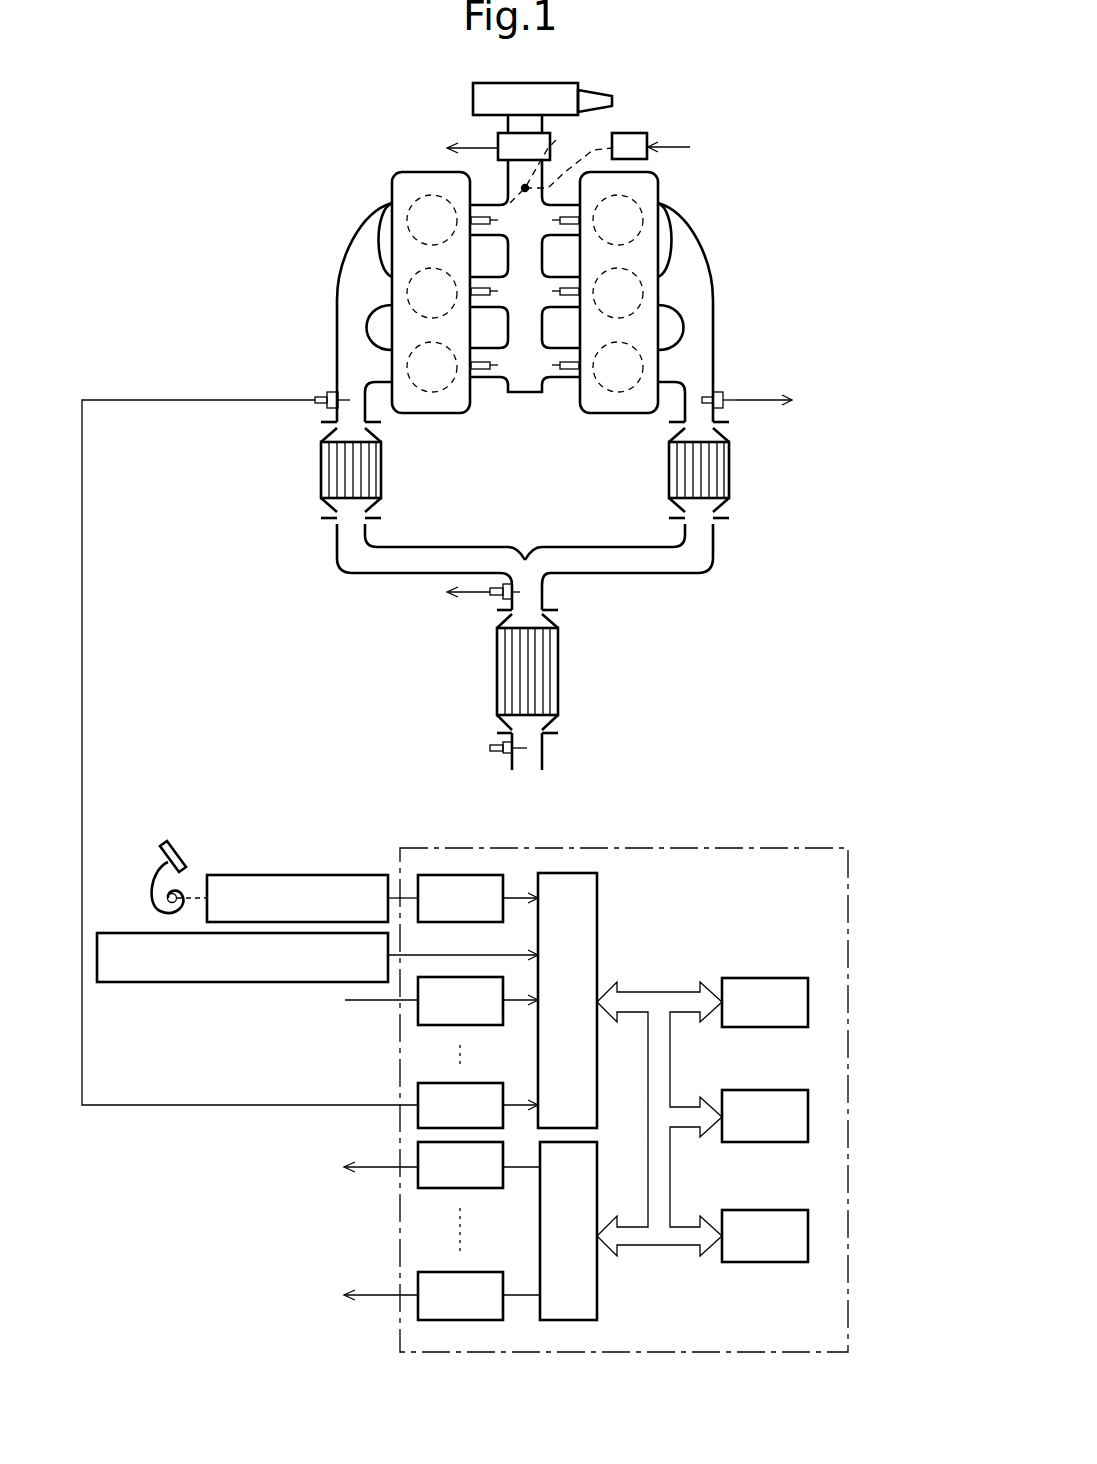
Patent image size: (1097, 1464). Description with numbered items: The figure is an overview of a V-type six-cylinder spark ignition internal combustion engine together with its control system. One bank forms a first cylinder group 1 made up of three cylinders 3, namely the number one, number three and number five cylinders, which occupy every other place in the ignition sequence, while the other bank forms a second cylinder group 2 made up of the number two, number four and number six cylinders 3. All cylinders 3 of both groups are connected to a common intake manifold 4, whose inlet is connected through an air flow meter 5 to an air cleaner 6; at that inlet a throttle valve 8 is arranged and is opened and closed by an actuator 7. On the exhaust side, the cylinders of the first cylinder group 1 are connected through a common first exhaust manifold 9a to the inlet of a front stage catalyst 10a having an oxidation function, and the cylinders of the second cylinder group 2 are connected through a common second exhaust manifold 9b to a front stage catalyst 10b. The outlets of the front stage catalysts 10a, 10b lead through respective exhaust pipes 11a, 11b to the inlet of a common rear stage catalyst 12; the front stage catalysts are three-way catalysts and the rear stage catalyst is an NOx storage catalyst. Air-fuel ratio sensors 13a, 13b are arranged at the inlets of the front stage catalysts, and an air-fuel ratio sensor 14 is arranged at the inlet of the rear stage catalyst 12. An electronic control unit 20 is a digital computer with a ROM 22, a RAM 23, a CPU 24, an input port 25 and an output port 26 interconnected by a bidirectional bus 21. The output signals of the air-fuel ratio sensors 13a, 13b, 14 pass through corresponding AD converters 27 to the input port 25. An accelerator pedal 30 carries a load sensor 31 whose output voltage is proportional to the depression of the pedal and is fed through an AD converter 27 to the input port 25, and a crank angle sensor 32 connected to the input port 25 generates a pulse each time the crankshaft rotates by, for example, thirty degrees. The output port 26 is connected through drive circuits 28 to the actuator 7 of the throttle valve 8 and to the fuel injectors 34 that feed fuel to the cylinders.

The first cylinder group 1 is at (662, 178).
The second cylinder group 2 is at (390, 175).
The cylinder 3 is at (412, 203).
The intake manifold 4 is at (504, 382).
The air flow meter 5 is at (497, 146).
The air cleaner 6 is at (483, 100).
The actuator 7 is at (630, 140).
The throttle valve 8 is at (556, 142).
The first exhaust manifold 9a is at (708, 330).
The second exhaust manifold 9b is at (342, 330).
The front stage catalyst 10a is at (720, 477).
The front stage catalyst 10b is at (330, 475).
The exhaust pipe 11a is at (645, 573).
The exhaust pipe 11b is at (400, 573).
The rear stage catalyst 12 is at (548, 672).
The air-fuel ratio sensor 13a is at (722, 392).
The air-fuel ratio sensor 13b is at (322, 392).
The air-fuel ratio sensor 14 is at (497, 598).
The electronic control unit 20 is at (852, 882).
The bidirectional bus 21 is at (666, 998).
The ROM 22 is at (757, 978).
The RAM 23 is at (757, 1090).
The CPU 24 is at (757, 1210).
The input port 25 is at (597, 905).
The output port 26 is at (597, 1298).
The AD converter 27 is at (440, 875).
The drive circuit 28 is at (418, 1185).
The accelerator pedal 30 is at (178, 856).
The load sensor 31 is at (291, 873).
The crank angle sensor 32 is at (187, 982).
The fuel injector 34 is at (482, 370).